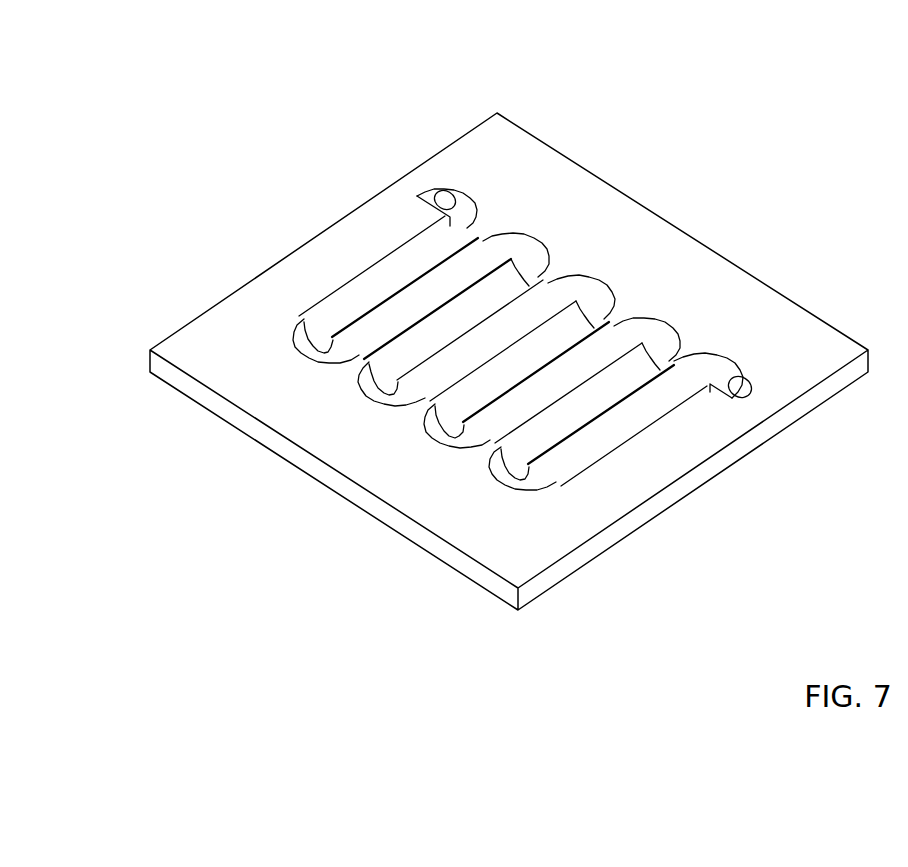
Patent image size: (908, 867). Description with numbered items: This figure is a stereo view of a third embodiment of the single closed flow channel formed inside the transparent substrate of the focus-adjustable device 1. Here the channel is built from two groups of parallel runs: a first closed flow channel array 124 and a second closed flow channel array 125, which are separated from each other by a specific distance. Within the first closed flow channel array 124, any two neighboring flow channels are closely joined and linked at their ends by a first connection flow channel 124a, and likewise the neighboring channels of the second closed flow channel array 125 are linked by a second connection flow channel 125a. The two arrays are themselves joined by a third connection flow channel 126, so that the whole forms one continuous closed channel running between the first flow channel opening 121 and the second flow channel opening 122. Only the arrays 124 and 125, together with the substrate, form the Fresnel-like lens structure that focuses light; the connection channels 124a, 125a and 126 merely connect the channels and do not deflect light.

The focus-adjustable device 1 is at (218, 82).
The first flow channel opening 121 is at (750, 395).
The second flow channel opening 122 is at (443, 198).
The first closed flow channel array 124 is at (670, 402).
The first connection flow channel 124a is at (520, 483).
The second closed flow channel array 125 is at (500, 318).
The second connection flow channel 125a is at (372, 395).
The third connection flow channel 126 is at (602, 283).